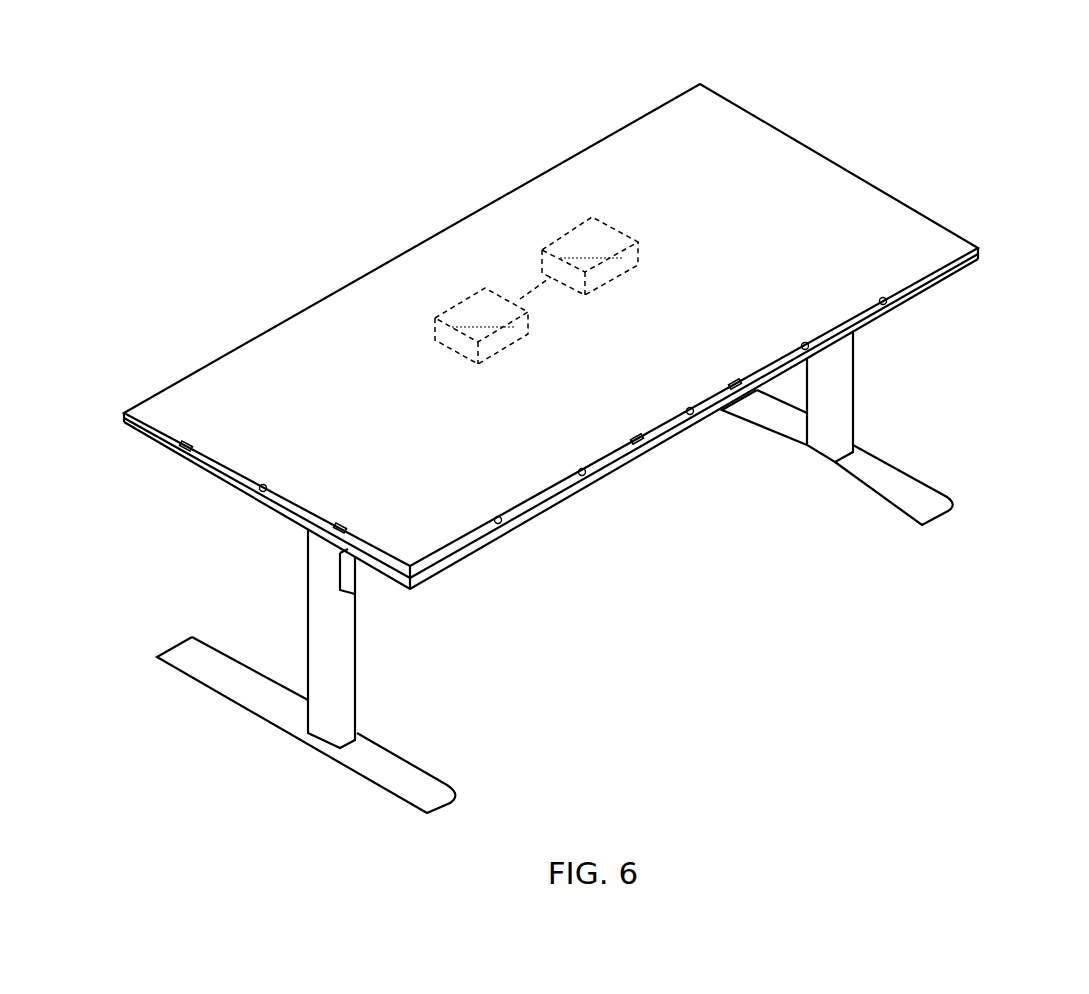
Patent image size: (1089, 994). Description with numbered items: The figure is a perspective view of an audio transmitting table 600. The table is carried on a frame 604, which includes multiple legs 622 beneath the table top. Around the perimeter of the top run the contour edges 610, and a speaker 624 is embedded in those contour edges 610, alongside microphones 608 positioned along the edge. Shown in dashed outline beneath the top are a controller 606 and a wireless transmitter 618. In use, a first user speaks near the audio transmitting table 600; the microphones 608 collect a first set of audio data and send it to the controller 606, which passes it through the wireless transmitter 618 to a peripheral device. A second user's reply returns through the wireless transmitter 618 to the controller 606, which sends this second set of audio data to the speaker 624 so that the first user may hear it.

The audio transmitting table 600 is at (305, 99).
The frame 604 is at (223, 753).
The controller 606 is at (493, 320).
The microphones 608 is at (579, 470).
The contour edges 610 is at (981, 252).
The wireless transmitter 618 is at (590, 256).
The legs 622 is at (358, 667).
The speaker 624 is at (634, 436).